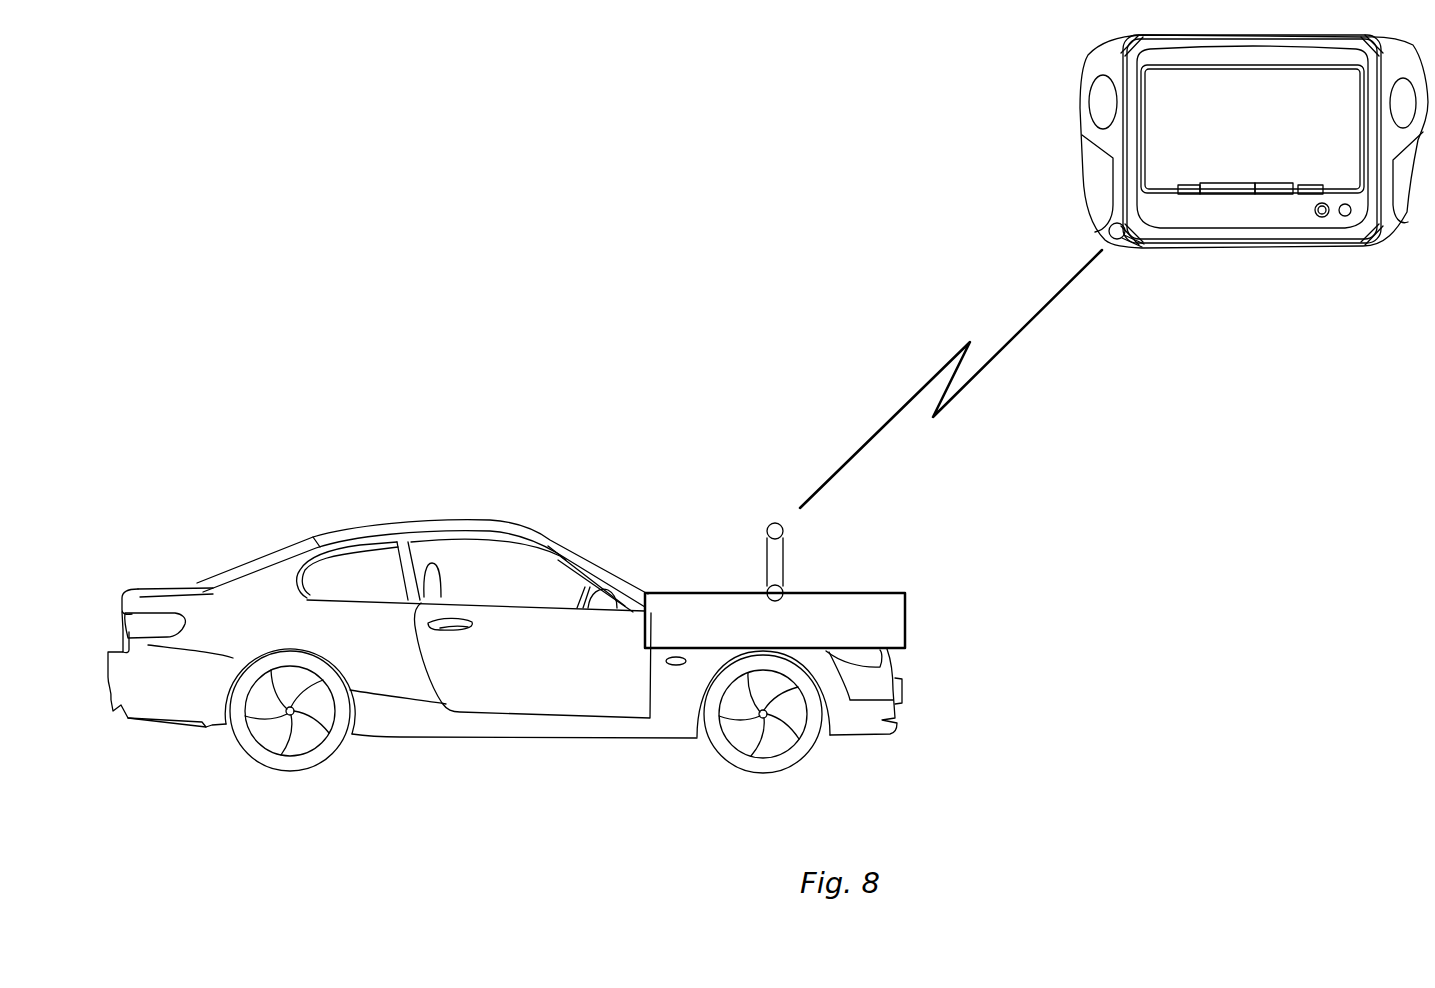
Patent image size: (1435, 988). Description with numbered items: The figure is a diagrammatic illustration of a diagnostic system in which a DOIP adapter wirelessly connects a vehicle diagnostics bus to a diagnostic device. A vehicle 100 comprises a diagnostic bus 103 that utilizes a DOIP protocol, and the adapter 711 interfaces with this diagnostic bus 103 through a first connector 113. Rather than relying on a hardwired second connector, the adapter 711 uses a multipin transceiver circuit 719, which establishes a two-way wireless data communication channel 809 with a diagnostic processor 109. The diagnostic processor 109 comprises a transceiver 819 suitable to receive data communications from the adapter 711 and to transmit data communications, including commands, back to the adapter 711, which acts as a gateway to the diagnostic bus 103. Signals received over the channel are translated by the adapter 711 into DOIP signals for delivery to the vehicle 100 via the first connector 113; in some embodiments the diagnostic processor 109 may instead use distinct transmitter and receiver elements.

The vehicle 100 is at (428, 519).
The diagnostic bus 103 is at (803, 634).
The diagnostic processor 109 is at (1280, 142).
The first connector 113 is at (783, 588).
The adapter 711 is at (766, 553).
The multipin transceiver circuit 719 is at (767, 523).
The two-way wireless data communication channel 809 is at (970, 387).
The transceiver 819 is at (1125, 238).